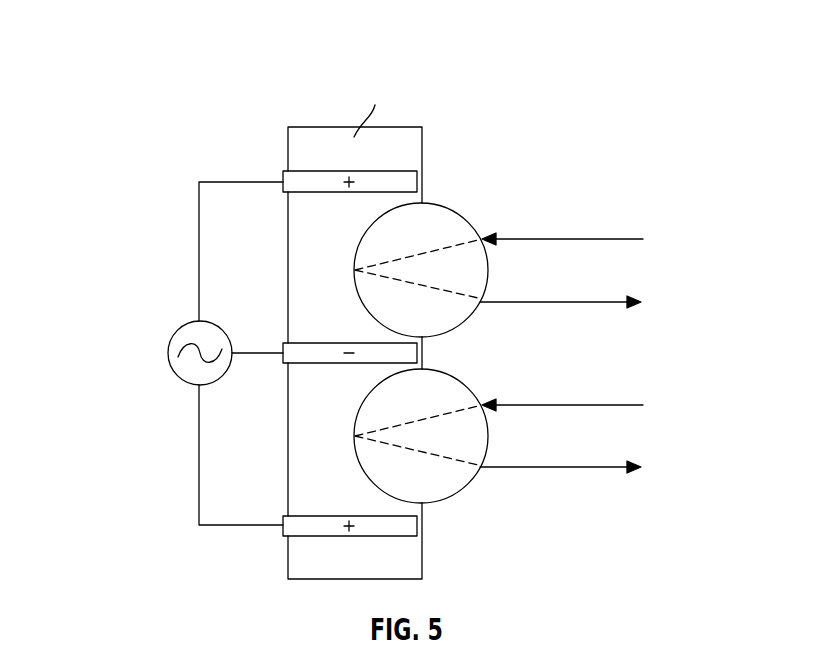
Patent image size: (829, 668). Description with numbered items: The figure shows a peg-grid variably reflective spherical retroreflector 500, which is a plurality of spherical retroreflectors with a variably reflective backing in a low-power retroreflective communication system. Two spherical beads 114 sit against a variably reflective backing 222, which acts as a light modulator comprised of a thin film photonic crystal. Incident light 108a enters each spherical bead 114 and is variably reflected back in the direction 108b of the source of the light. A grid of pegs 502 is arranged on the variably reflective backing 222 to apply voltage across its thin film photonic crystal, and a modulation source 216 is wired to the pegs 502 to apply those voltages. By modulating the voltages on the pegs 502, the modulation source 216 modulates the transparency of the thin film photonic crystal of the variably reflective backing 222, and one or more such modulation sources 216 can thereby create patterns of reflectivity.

The peg-grid variably reflective spherical retroreflector 500 is at (108, 54).
The variably reflective backing 222 is at (410, 564).
The pegs 502 is at (296, 171).
The modulation source 216 is at (180, 331).
The spherical bead 114 is at (456, 213).
The incident light 108a is at (612, 239).
The direction of the source of the light 108b is at (612, 302).